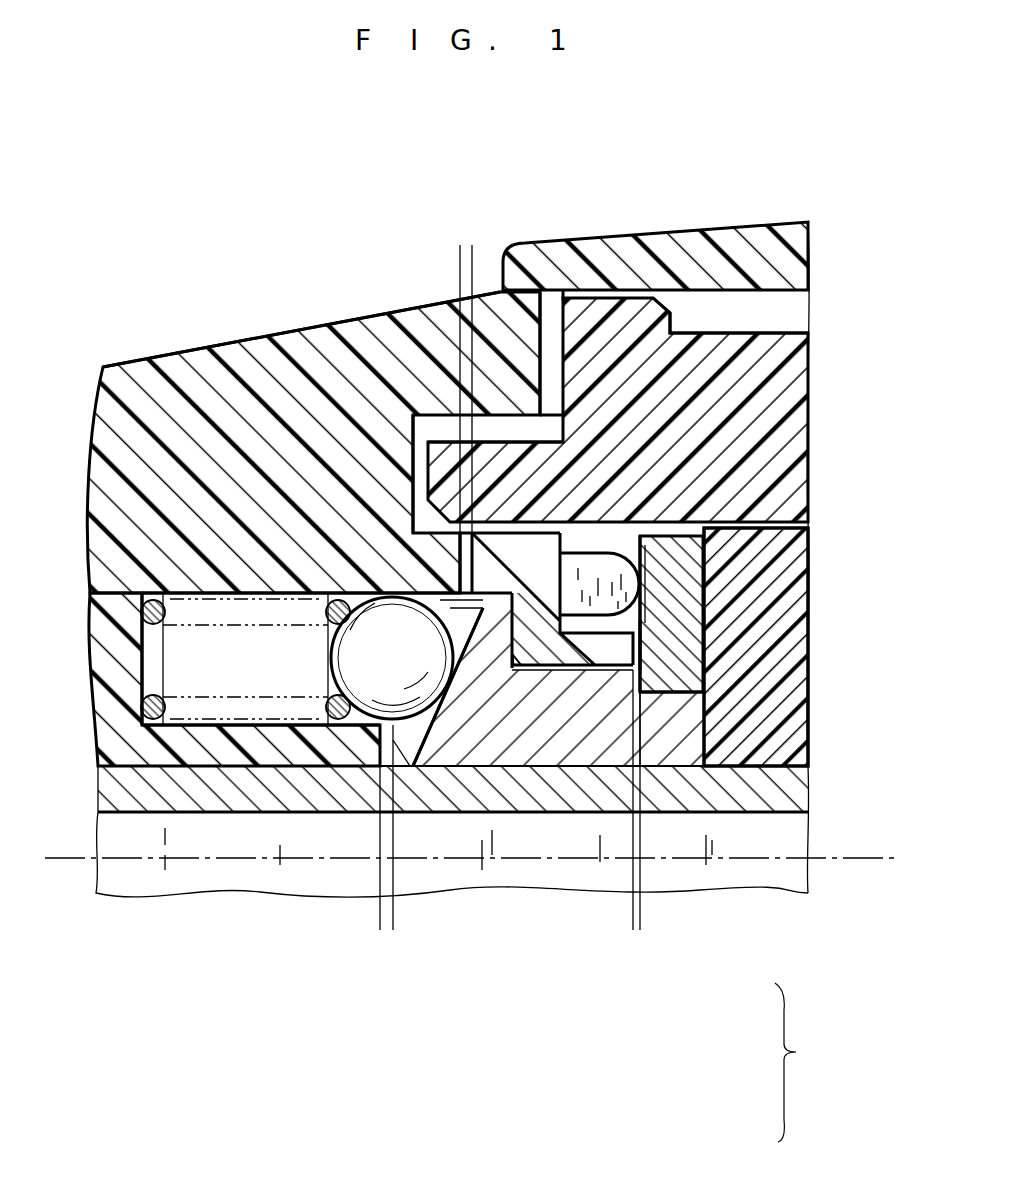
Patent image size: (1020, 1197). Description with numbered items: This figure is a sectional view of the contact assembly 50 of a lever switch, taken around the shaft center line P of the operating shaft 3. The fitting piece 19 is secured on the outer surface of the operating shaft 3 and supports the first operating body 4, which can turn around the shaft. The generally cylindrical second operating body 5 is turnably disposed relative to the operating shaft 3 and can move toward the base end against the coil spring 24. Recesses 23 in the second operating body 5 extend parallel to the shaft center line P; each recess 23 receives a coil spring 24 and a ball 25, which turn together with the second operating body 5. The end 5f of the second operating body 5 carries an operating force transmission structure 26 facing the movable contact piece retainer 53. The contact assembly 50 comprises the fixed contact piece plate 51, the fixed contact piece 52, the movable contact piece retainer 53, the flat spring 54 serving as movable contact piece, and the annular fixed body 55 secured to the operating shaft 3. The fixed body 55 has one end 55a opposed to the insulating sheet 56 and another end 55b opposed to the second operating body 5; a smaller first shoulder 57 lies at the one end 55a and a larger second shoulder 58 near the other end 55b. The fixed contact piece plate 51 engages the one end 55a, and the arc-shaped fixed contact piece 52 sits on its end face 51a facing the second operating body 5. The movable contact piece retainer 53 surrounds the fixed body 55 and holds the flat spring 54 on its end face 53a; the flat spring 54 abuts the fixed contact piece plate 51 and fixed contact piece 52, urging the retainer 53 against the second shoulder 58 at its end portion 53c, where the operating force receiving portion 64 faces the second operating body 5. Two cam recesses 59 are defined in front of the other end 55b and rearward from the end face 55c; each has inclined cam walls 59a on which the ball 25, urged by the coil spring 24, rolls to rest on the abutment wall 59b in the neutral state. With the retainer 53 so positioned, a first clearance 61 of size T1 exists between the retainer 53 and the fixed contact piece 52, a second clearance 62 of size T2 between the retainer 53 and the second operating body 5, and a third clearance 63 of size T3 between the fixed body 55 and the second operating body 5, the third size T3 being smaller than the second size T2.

The operating shaft 3 is at (787, 788).
The first operating body 4 is at (690, 260).
The second operating body 5 is at (187, 352).
The end 5f is at (275, 415).
The fitting piece 19 is at (785, 332).
The recesses 23 is at (233, 707).
The coil spring 24 is at (143, 585).
The ball 25 is at (158, 672).
The operating force transmission structure 26 is at (350, 450).
The contact assembly 50 is at (784, 1061).
The fixed contact piece plate 51 is at (750, 700).
The end face 51a is at (641, 618).
The fixed contact piece 52 is at (647, 597).
The movable contact piece retainer 53 is at (578, 553).
The end face 53a is at (690, 331).
The end portion 53c is at (548, 400).
The flat spring 54 is at (614, 553).
The fixed body 55 is at (555, 740).
The one end 55a is at (692, 735).
The other end 55b is at (455, 738).
The end face 55c is at (400, 745).
The insulating sheet 56 is at (770, 669).
The first shoulder 57 is at (662, 720).
The second shoulder 58 is at (470, 700).
The cam recess 59 is at (388, 735).
The cam wall 59a is at (407, 596).
The abutment wall 59b is at (415, 602).
The first clearance 61 is at (641, 645).
The second clearance 62 is at (410, 500).
The third clearance 63 is at (345, 718).
The operating force receiving portion 64 is at (488, 505).
The shaft center line P is at (850, 857).
The first size T1 is at (640, 916).
The second size T2 is at (472, 265).
The third size T3 is at (393, 917).